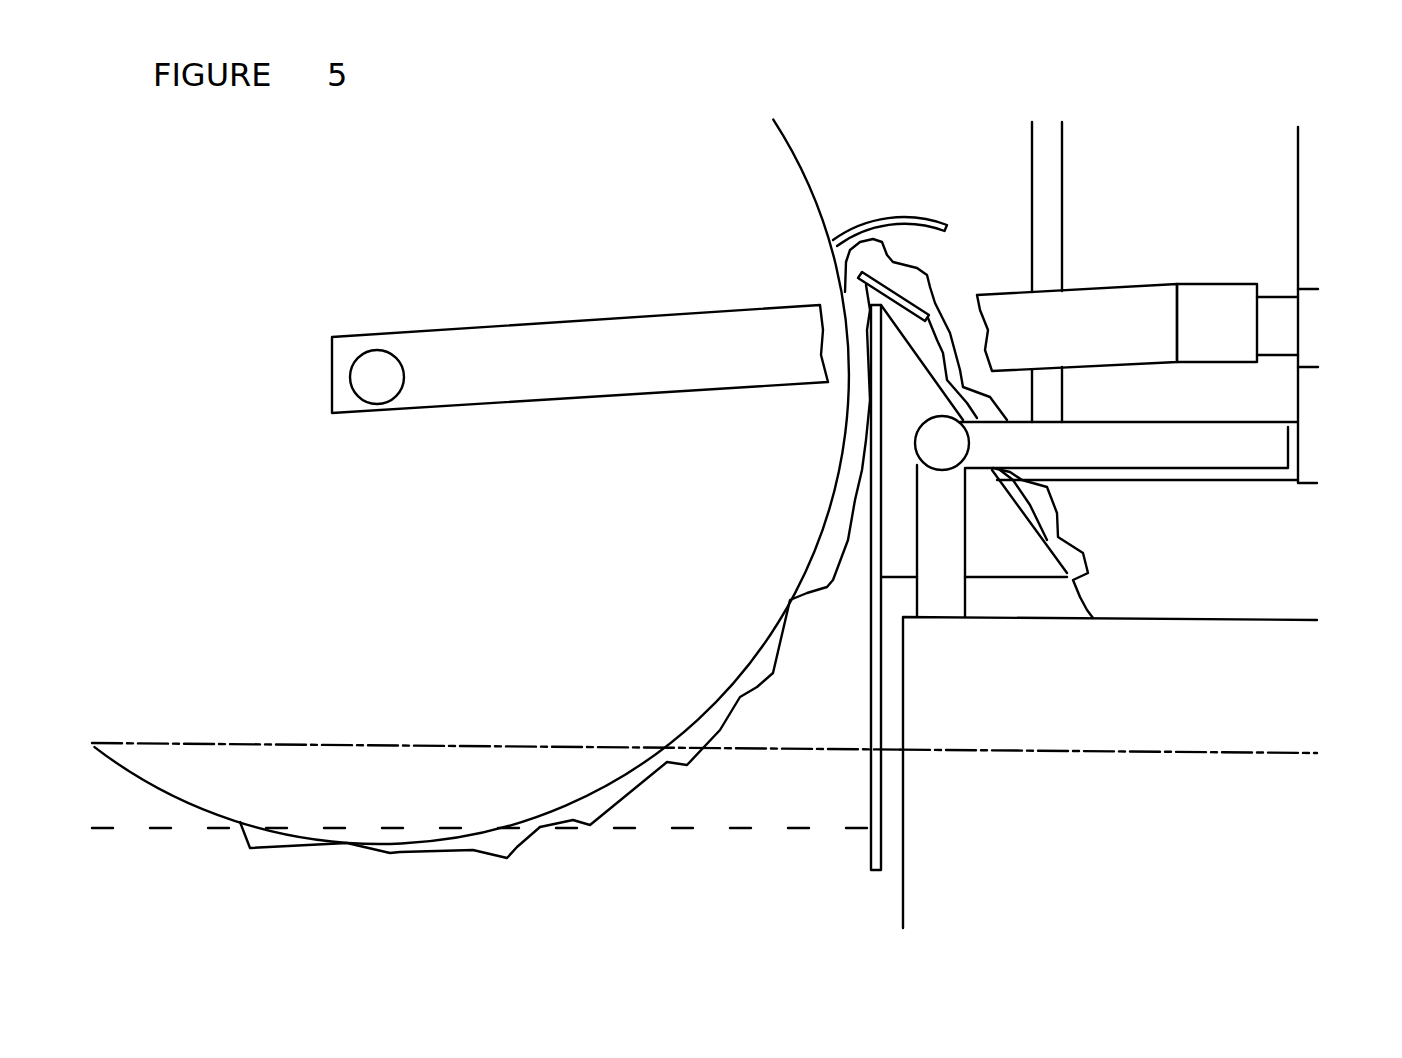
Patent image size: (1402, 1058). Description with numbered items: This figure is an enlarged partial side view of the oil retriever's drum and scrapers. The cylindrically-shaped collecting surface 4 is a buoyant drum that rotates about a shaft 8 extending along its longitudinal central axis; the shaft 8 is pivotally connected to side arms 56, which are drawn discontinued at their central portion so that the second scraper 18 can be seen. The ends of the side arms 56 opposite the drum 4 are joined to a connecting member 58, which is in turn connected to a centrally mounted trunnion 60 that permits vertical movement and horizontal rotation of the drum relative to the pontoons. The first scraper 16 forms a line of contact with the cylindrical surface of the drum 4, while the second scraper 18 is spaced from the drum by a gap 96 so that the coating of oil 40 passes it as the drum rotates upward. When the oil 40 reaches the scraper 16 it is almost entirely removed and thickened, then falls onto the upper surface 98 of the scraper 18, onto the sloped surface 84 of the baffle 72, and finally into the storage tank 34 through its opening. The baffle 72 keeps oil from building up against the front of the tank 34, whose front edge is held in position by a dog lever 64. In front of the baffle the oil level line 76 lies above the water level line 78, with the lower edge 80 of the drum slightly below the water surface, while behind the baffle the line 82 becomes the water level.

The collecting surface 4 is at (472, 452).
The shaft 8 is at (359, 295).
The first scraper 16 is at (908, 217).
The second scraper 18 is at (885, 289).
The storage tank 34 is at (1260, 643).
The oil 40 is at (1103, 543).
The side arm 56 is at (580, 313).
The connecting member 58 is at (1147, 302).
The trunnion 60 is at (1288, 320).
The dog lever 64 is at (1089, 516).
The baffle 72 is at (751, 577).
The oil level line 76 is at (496, 705).
The water level line 78 is at (480, 863).
The lower edge of the drum 80 is at (390, 866).
The water level line 82 is at (1108, 794).
The sloped surface 84 is at (1063, 521).
The gap 96 is at (827, 237).
The upper surface of the scraper 98 is at (961, 325).